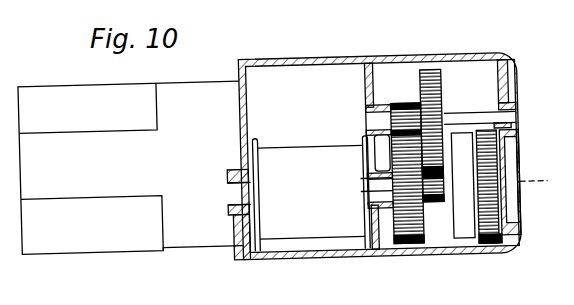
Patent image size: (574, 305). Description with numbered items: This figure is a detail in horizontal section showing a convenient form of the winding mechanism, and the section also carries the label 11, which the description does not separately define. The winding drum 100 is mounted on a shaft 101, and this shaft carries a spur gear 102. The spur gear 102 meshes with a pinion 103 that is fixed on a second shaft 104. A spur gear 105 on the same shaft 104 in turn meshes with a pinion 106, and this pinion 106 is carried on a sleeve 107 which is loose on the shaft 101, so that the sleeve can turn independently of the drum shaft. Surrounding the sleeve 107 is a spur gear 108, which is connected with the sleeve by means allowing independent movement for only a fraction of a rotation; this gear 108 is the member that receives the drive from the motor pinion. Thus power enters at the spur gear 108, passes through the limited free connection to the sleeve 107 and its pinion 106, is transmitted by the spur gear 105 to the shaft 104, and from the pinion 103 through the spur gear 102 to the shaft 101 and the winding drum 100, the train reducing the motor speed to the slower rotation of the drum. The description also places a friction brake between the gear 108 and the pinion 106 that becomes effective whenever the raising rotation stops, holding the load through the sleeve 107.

The shaft 11 is at (364, 190).
The winding drum 100 is at (296, 145).
The shaft 101 is at (227, 191).
The spur gear 102 is at (414, 245).
The pinion 103 is at (401, 104).
The shaft 104 is at (467, 114).
The spur gear 105 is at (442, 70).
The pinion 106 is at (457, 187).
The sleeve 107 is at (368, 173).
The spur gear 108 is at (500, 247).